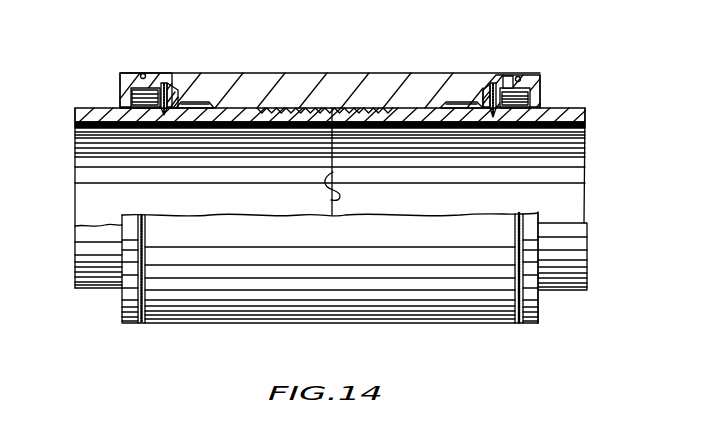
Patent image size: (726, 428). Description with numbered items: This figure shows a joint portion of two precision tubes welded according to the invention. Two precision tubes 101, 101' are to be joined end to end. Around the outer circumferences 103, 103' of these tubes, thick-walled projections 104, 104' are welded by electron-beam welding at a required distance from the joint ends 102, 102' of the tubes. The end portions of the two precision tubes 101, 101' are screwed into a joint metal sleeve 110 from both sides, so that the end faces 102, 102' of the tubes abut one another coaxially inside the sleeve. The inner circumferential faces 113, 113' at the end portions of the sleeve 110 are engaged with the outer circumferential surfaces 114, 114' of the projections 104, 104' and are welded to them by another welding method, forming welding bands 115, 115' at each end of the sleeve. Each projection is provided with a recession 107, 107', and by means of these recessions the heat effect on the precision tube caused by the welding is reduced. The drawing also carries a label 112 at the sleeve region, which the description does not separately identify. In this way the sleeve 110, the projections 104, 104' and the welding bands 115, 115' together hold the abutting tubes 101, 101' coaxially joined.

The precision tube 101 is at (303, 186).
The precision tube 101' is at (606, 194).
The joint end 102 is at (330, 247).
The joint end 102' is at (442, 253).
The outer circumference 103 is at (218, 74).
The outer circumference 103' is at (466, 73).
The thick-walled projection 104 is at (117, 72).
The thick-walled projection 104' is at (547, 85).
The recession 107 is at (112, 83).
The recession 107' is at (566, 90).
The joint metal sleeve 110 is at (330, 50).
The serrations 112 is at (410, 112).
The inner circumferential face 113 is at (154, 68).
The inner circumferential face 113' is at (537, 68).
The outer circumferential surface 114 is at (189, 77).
The outer circumferential surface 114' is at (512, 62).
The welding band 115 is at (126, 189).
The welding band 115' is at (554, 197).